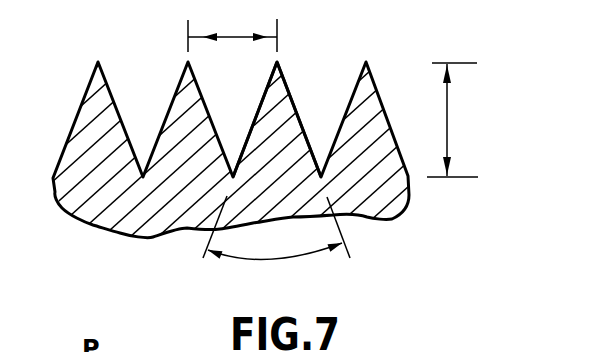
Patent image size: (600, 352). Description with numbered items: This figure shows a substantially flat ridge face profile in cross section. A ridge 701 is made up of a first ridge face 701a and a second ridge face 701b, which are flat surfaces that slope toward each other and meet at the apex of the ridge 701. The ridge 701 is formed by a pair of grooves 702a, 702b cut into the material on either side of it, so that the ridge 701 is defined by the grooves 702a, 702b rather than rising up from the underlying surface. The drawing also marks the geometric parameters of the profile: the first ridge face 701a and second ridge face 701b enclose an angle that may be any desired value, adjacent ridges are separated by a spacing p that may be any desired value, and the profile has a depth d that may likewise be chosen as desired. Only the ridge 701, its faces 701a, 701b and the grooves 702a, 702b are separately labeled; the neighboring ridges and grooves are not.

The ridge 701 is at (277, 62).
The first ridge face 701a is at (252, 115).
The second ridge face 701b is at (305, 110).
The groove 702a is at (250, 131).
The groove 702b is at (322, 142).
The spacing P is at (236, 37).
The depth d is at (447, 127).